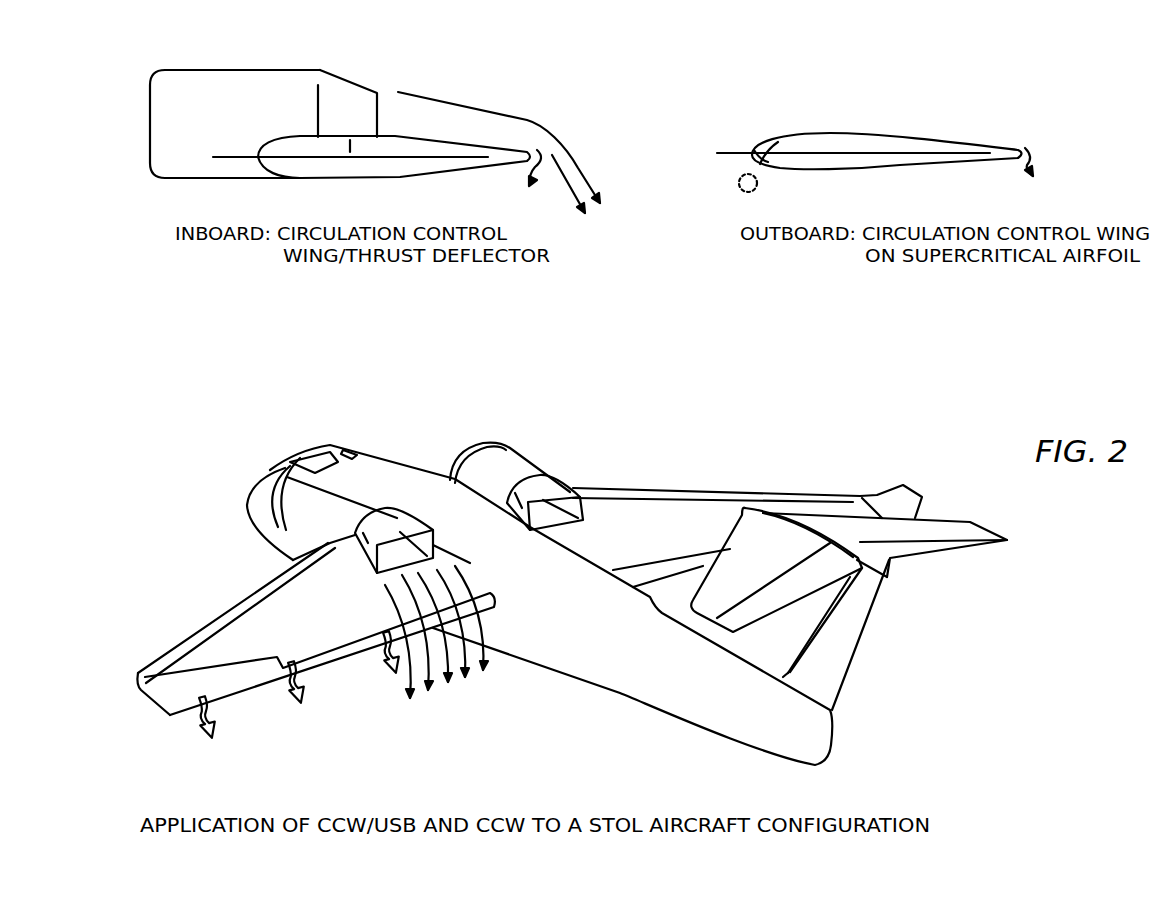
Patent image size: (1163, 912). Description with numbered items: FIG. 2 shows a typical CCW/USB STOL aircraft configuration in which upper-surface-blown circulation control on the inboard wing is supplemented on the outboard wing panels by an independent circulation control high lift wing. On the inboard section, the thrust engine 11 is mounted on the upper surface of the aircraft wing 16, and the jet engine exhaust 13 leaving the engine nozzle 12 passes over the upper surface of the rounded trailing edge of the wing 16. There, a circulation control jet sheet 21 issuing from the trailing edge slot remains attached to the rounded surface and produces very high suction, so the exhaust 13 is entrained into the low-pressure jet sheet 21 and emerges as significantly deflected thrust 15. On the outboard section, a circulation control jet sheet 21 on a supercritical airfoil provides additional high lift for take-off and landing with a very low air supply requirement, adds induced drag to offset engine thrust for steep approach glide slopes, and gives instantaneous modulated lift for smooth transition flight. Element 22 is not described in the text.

The thrust engine 11 is at (232, 131).
The engine nozzle 12 is at (379, 121).
The jet engine exhaust 13 is at (495, 110).
The deflected thrust 15 is at (595, 193).
The aircraft wing 16 is at (350, 150).
The circulation control jet sheet 21 is at (1036, 161).
The leading edge blowing slot 22 is at (757, 185).